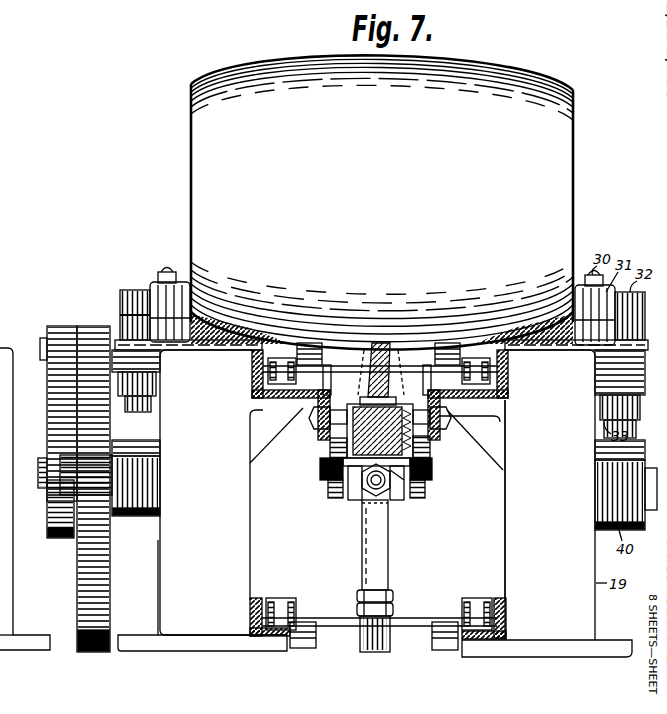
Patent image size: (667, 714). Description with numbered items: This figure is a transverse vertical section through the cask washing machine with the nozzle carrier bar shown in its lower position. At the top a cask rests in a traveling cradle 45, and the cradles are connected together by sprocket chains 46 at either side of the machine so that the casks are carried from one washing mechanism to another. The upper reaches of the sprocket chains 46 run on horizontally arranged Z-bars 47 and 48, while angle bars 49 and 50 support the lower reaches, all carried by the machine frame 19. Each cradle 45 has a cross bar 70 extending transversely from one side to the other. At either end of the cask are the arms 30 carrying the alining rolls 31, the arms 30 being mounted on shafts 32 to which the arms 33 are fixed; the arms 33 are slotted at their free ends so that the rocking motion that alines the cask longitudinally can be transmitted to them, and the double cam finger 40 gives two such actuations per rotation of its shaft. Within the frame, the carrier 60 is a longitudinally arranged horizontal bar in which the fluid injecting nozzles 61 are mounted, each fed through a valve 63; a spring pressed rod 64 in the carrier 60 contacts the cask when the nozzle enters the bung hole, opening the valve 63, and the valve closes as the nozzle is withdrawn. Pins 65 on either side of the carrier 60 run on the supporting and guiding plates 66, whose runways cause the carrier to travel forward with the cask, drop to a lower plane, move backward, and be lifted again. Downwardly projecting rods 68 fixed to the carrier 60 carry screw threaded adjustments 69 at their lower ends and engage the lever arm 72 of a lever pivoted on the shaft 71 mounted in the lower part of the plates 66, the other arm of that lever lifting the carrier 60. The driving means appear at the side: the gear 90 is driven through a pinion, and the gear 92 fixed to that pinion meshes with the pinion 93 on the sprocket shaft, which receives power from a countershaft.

The machine frame 19 is at (157, 577).
The arm 30 is at (168, 274).
The alining roll 31 is at (158, 290).
The shaft 32 is at (127, 290).
The arm 33 is at (122, 414).
The cam finger 40 is at (140, 518).
The traveling cradle 45 is at (308, 343).
The sprocket chain 46 is at (268, 366).
The Z-bar 47 is at (250, 417).
The Z-bar 48 is at (500, 418).
The angle bar 49 is at (258, 598).
The angle bar 50 is at (495, 598).
The carrier 60 is at (345, 440).
The fluid injecting nozzle 61 is at (362, 386).
The valve 63 is at (362, 482).
The spring pressed rod 64 is at (383, 343).
The pin 65 is at (330, 442).
The supporting and guiding plate 66 is at (420, 450).
The downwardly projecting rod 68 is at (388, 554).
The screw threaded adjustment 69 is at (362, 632).
The cross bar 70 is at (408, 386).
The shaft 71 is at (424, 472).
The lever arm 72 is at (394, 500).
The gear 90 is at (77, 596).
The gear 92 is at (50, 542).
The pinion 93 is at (60, 326).